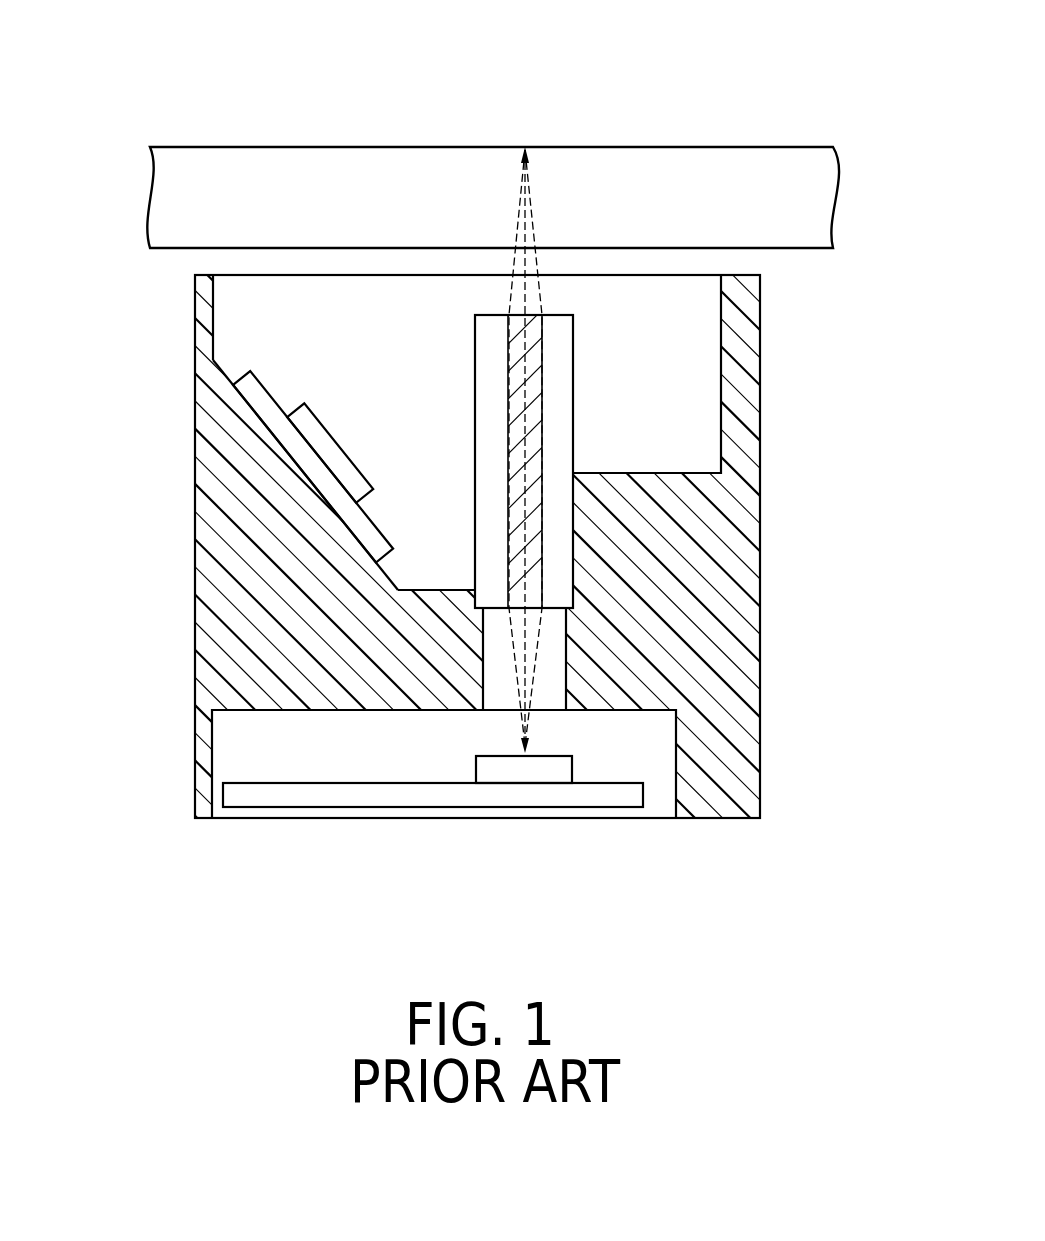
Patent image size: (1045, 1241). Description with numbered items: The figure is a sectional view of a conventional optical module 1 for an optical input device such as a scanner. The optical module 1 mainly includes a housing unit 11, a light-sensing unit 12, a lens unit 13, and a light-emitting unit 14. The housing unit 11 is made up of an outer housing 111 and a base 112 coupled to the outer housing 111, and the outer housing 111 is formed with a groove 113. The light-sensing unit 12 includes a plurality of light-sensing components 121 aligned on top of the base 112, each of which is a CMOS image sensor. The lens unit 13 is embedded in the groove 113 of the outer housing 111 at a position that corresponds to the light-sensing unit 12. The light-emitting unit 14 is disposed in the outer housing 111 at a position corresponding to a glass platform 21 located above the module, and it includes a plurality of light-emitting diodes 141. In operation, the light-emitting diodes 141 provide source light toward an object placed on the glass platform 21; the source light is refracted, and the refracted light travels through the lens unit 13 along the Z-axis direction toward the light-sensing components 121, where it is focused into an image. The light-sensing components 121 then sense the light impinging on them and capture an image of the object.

The optical module 1 is at (165, 348).
The housing unit 11 is at (457, 600).
The outer housing 111 is at (212, 538).
The base 112 is at (300, 793).
The groove 113 is at (568, 615).
The light-sensing unit 12 is at (558, 850).
The light-sensing components 121 is at (573, 768).
The lens unit 13 is at (598, 385).
The light-emitting unit 14 is at (320, 318).
The light-emitting diodes 141 is at (348, 467).
The glass platform 21 is at (636, 138).